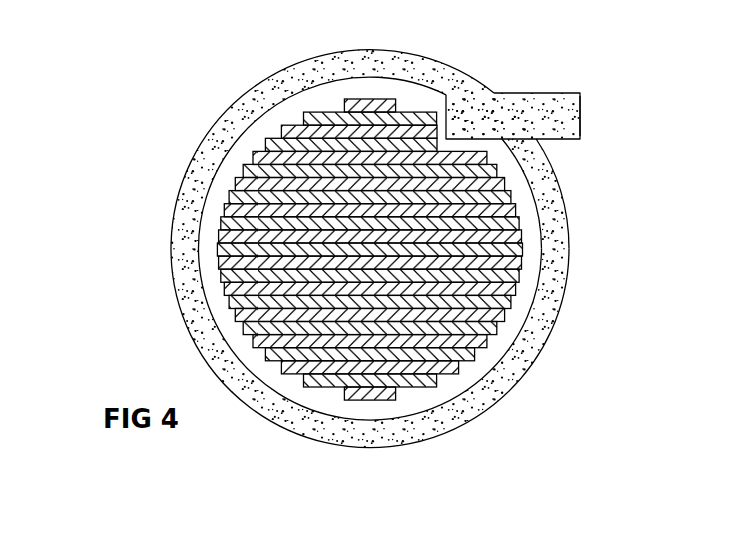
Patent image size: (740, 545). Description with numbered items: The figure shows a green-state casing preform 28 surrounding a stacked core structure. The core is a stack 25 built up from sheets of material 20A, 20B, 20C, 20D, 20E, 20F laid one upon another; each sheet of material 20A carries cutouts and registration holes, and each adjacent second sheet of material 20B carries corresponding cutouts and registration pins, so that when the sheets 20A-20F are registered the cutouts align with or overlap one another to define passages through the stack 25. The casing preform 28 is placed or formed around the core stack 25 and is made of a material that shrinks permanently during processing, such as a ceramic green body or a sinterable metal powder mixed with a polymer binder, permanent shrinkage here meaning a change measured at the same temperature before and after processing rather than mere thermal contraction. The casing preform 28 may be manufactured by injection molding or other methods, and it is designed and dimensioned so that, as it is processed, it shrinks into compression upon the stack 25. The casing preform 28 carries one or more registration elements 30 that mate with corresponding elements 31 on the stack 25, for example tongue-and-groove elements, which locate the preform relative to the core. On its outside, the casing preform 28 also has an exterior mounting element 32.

The sheet of material 20A is at (226, 207).
The second sheet of material 20B is at (222, 222).
The sheet 20C is at (220, 236).
The sheet 20D is at (219, 250).
The sheet 20E is at (220, 264).
The sheet 20F is at (223, 281).
The stack 25 is at (330, 103).
The casing preform 28 is at (222, 132).
The registration element 30 is at (457, 125).
The corresponding element 31 is at (524, 191).
The exterior mounting element 32 is at (565, 116).